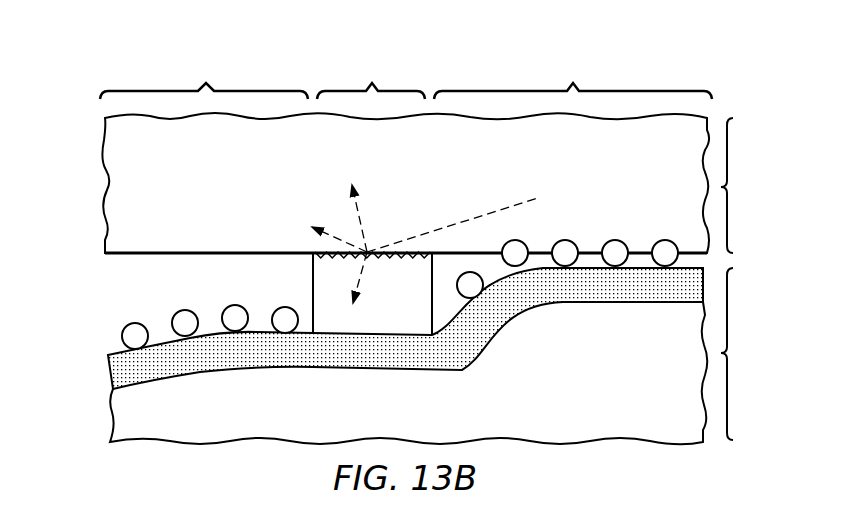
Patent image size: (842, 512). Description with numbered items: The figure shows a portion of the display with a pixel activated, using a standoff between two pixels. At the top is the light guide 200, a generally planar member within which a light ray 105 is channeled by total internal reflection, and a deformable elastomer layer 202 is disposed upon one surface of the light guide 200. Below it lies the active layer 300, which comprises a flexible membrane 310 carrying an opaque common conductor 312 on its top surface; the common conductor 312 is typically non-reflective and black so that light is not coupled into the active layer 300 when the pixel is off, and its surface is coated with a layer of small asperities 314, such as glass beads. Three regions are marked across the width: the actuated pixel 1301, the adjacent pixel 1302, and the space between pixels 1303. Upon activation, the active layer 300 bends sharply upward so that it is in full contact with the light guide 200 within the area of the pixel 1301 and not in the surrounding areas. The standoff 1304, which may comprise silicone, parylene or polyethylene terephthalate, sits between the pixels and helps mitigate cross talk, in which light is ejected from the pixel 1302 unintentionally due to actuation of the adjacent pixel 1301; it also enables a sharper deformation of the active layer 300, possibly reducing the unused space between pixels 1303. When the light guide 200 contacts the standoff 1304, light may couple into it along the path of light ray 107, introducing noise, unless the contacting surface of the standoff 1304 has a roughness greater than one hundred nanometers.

The light ray 105 is at (493, 212).
The light ray 107 is at (362, 273).
The light guide 200 is at (752, 185).
The deformable elastomer layer 202 is at (110, 176).
The active layer 300 is at (752, 354).
The flexible membrane 310 is at (107, 422).
The common conductor 312 is at (108, 377).
The asperities 314 is at (126, 312).
The pixel 1301 is at (573, 77).
The pixel 1302 is at (204, 77).
The space between pixels 1303 is at (371, 77).
The standoff 1304 is at (313, 295).